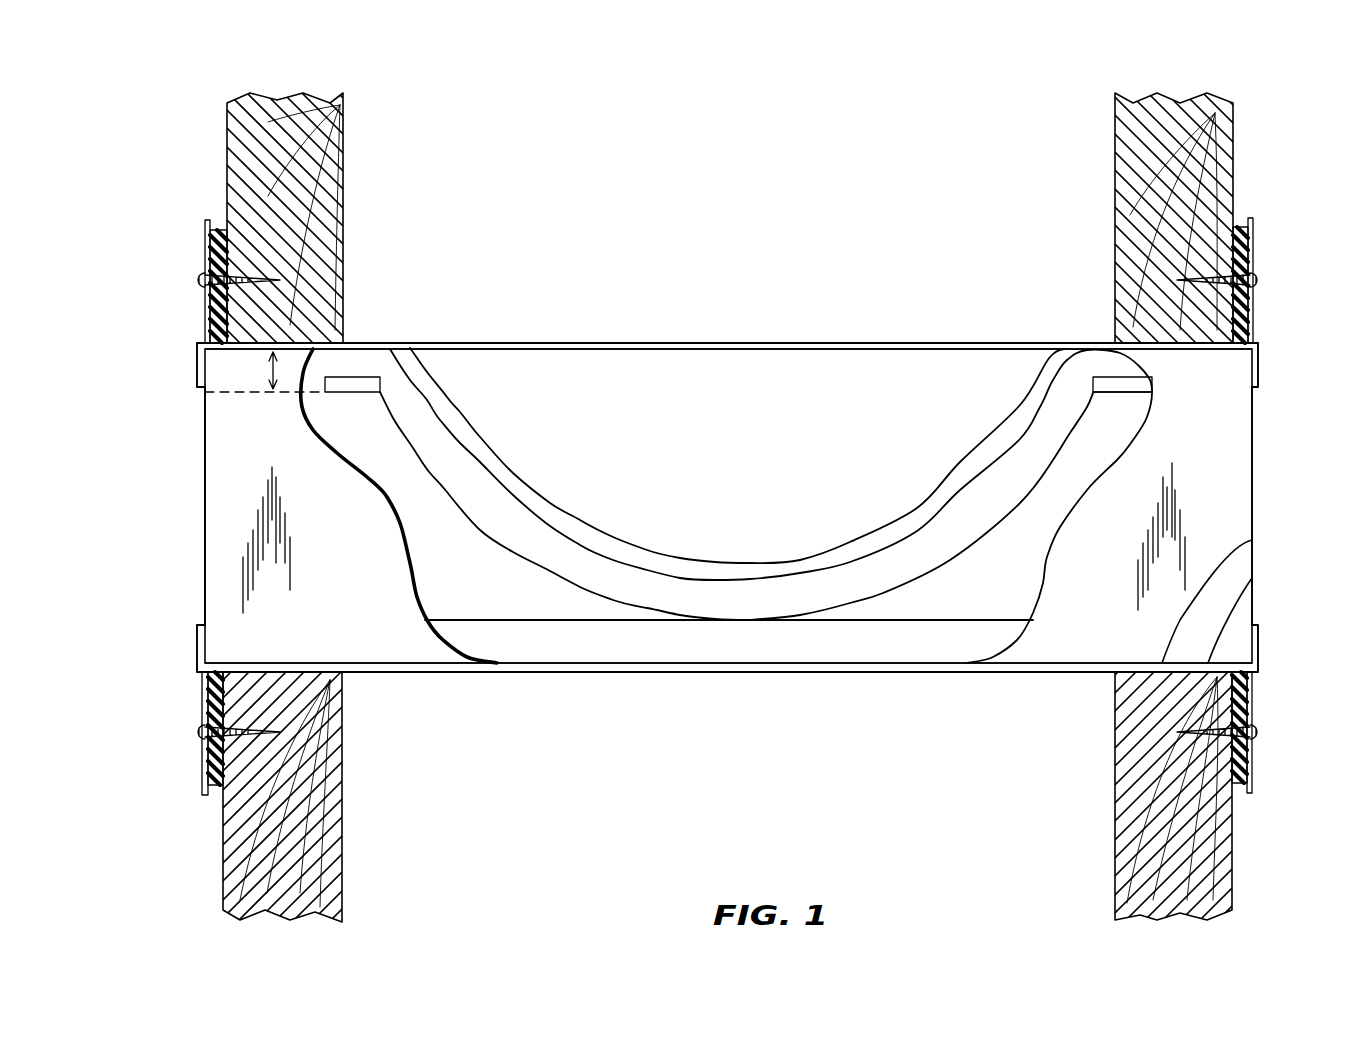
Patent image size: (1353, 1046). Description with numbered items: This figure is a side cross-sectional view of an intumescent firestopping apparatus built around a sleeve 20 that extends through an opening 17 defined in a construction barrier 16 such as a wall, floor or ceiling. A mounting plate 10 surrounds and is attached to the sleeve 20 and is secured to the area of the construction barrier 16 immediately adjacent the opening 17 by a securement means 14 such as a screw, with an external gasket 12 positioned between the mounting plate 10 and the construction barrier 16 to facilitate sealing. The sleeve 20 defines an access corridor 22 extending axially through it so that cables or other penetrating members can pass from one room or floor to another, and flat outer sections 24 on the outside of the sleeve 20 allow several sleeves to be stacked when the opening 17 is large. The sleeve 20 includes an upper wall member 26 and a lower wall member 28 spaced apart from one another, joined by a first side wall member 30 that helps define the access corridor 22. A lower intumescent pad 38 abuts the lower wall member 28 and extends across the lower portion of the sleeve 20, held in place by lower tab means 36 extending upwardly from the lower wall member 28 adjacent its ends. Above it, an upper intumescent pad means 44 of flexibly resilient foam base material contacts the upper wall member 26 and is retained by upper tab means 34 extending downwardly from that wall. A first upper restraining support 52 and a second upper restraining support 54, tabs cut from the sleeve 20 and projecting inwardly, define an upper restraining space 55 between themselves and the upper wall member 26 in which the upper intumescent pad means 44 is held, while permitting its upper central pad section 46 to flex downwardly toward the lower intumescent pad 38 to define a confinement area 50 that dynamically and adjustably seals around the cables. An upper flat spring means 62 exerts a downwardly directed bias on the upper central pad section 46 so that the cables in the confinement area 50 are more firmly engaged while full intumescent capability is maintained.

The mounting plate 10 is at (203, 233).
The external gasket 12 is at (218, 227).
The securement means 14 is at (197, 277).
The construction barrier 16 is at (243, 124).
The opening 17 is at (350, 343).
The sleeve 20 is at (712, 343).
The access corridor 22 is at (362, 462).
The flat outer sections 24 is at (470, 343).
The upper wall member 26 is at (614, 343).
The lower wall member 28 is at (1252, 578).
The first side wall member 30 is at (532, 414).
The upper tab means 34 is at (197, 365).
The lower tab means 36 is at (197, 645).
The lower intumescent pad 38 is at (877, 654).
The upper intumescent pad means 44 is at (1100, 392).
The upper central pad section 46 is at (745, 597).
The confinement area 50 is at (502, 608).
The first upper restraining support 52 is at (353, 390).
The second upper restraining support 54 is at (1125, 393).
The upper restraining space 55 is at (303, 370).
The upper flat spring means 62 is at (445, 400).